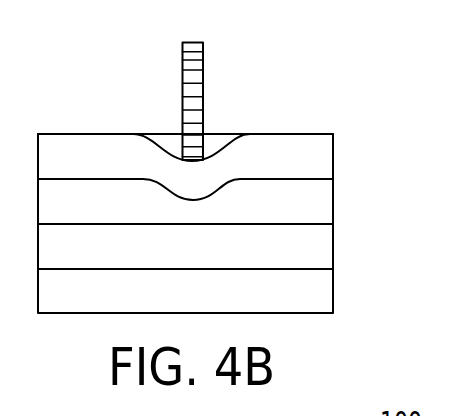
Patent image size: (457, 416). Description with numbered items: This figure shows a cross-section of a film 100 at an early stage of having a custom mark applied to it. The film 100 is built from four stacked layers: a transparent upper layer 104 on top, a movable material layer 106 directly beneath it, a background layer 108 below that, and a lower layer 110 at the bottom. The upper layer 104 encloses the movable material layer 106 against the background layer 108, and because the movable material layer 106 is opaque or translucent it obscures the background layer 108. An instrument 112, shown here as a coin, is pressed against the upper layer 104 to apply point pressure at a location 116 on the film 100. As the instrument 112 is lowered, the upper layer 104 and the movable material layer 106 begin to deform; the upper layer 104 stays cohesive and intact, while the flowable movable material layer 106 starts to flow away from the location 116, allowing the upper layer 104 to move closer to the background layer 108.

The film 100 is at (315, 100).
The upper layer 104 is at (290, 163).
The movable material layer 106 is at (290, 208).
The background layer 108 is at (290, 253).
The lower layer 110 is at (290, 297).
The instrument 112 is at (185, 118).
The location 116 is at (207, 160).